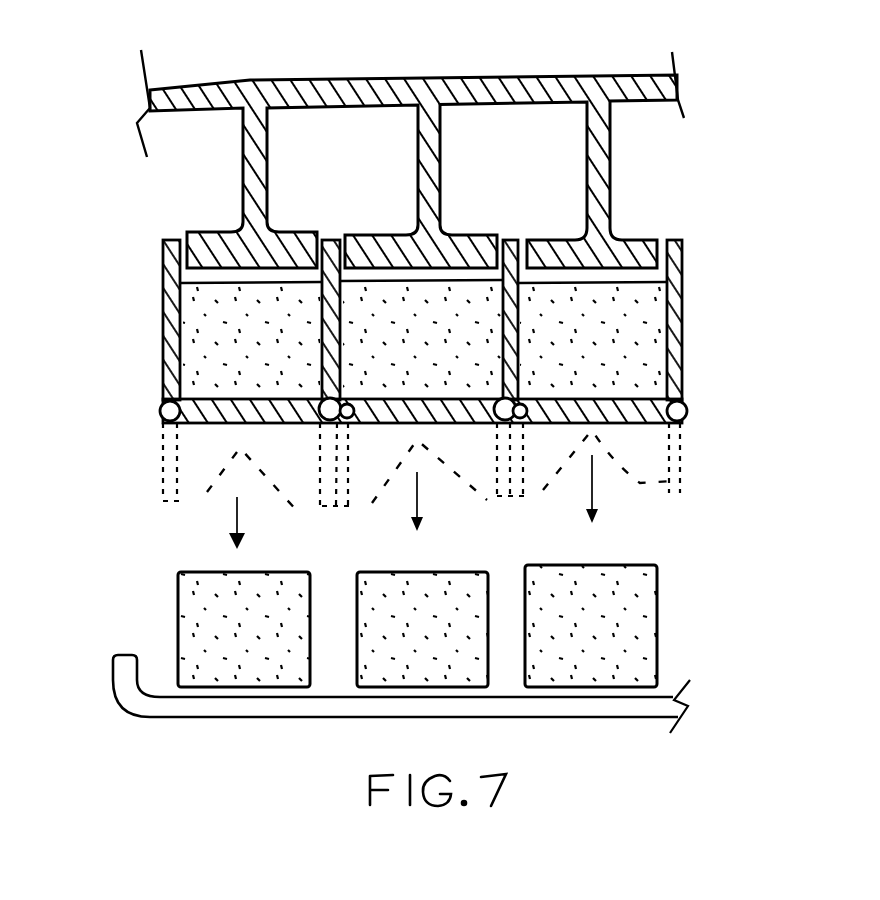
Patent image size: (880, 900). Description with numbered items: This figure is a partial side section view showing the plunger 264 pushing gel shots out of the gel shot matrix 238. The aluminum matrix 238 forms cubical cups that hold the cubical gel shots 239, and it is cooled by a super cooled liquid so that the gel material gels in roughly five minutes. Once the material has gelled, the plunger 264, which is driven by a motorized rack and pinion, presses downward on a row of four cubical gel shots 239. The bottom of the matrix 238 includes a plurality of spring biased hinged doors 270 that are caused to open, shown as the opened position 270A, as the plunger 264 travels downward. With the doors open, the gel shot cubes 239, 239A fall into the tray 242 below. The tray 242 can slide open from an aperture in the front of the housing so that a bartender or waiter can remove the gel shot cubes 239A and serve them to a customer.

The plunger 264 is at (433, 76).
The gel shot matrix 238 is at (682, 344).
The cubical gel shots 239 is at (215, 342).
The spring biased hinged doors 270 is at (197, 418).
The opened doors 270A is at (157, 485).
The gel shot cubes 239A is at (192, 620).
The tray 242 is at (620, 710).